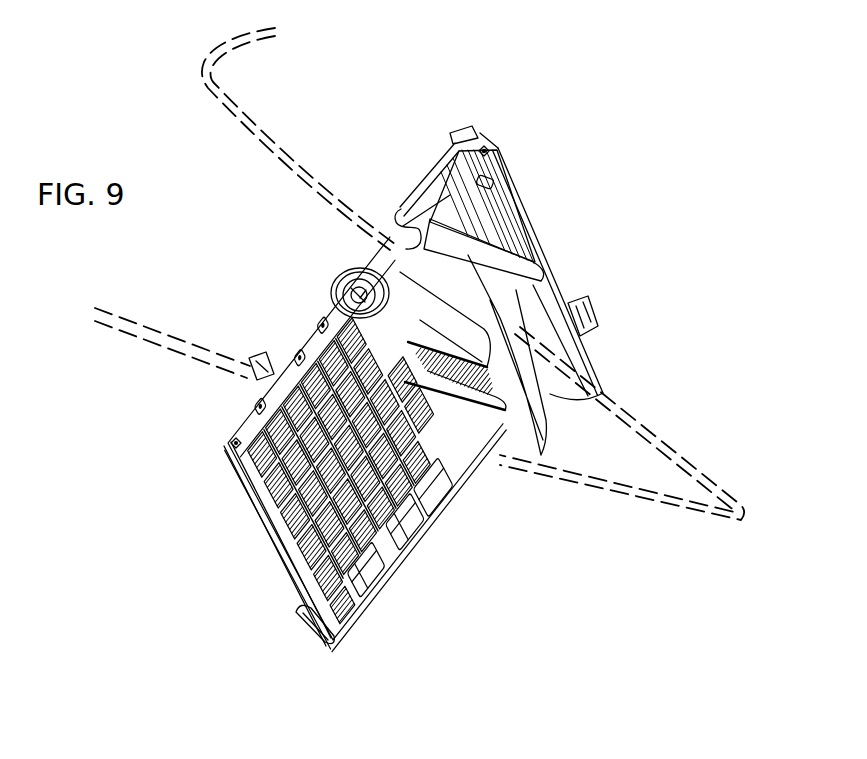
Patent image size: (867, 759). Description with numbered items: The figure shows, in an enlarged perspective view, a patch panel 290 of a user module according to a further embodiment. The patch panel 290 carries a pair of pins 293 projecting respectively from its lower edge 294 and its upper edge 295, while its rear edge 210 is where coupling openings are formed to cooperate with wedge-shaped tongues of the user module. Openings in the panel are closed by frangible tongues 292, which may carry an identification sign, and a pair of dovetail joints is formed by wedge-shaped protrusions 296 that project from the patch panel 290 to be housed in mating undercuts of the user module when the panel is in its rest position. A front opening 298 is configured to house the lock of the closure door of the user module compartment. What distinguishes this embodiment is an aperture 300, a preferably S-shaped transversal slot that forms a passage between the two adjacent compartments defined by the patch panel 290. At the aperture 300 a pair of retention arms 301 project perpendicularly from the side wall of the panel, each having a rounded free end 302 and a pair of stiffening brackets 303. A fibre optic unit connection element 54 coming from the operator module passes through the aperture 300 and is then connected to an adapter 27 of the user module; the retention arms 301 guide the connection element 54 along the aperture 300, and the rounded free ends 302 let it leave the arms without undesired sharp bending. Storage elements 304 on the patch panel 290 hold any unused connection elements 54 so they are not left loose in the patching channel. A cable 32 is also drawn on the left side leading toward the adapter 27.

The adapter 27 is at (277, 358).
The cable 32 is at (147, 336).
The fibre optic unit connection element 54 is at (270, 150).
The rear edge 210 is at (430, 528).
The patch panel 290 is at (565, 223).
The frangible tongue 292 is at (355, 435).
The pin 293 is at (313, 628).
The lower edge 294 is at (293, 553).
The upper edge 295 is at (542, 262).
The wedge-shaped protrusion 296 is at (490, 147).
The front opening 298 is at (343, 278).
The aperture 300 is at (410, 222).
The retention arm 301 is at (483, 223).
The rounded free end 302 is at (543, 307).
The stiffening bracket 303 is at (505, 230).
The storage element 304 is at (340, 578).